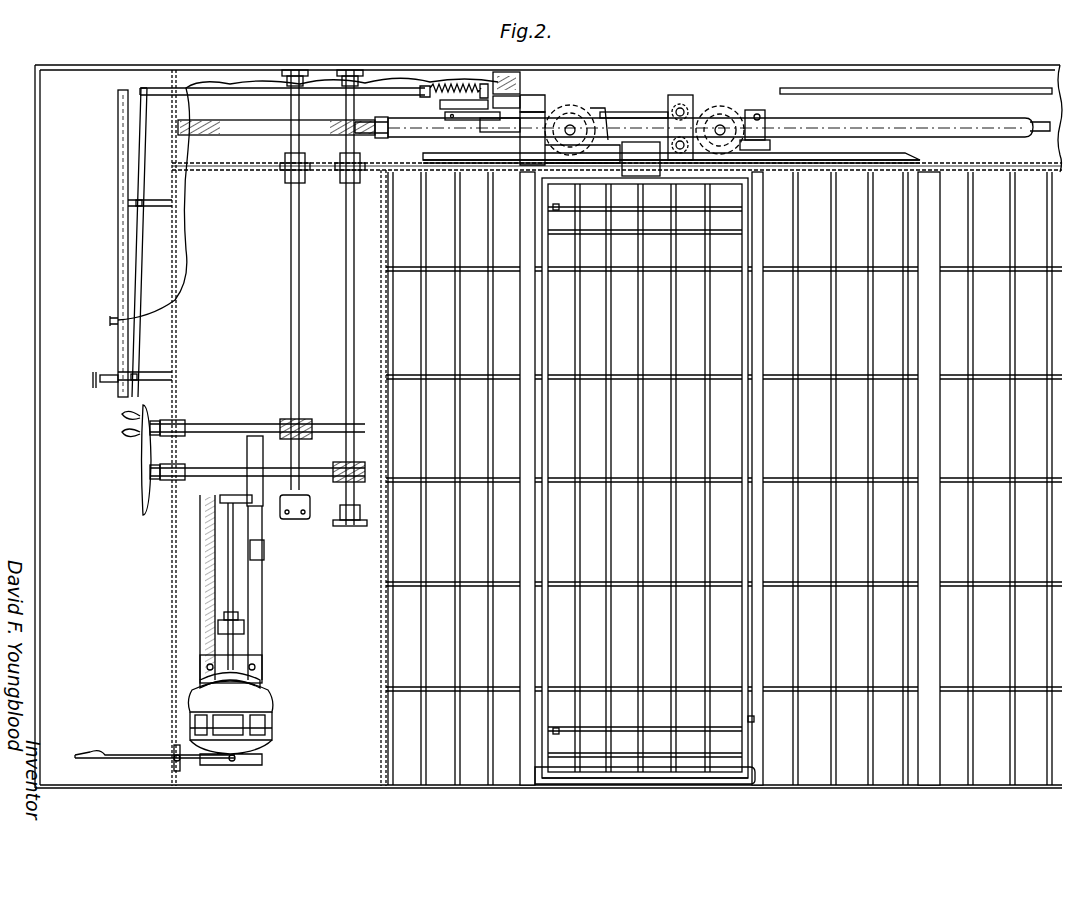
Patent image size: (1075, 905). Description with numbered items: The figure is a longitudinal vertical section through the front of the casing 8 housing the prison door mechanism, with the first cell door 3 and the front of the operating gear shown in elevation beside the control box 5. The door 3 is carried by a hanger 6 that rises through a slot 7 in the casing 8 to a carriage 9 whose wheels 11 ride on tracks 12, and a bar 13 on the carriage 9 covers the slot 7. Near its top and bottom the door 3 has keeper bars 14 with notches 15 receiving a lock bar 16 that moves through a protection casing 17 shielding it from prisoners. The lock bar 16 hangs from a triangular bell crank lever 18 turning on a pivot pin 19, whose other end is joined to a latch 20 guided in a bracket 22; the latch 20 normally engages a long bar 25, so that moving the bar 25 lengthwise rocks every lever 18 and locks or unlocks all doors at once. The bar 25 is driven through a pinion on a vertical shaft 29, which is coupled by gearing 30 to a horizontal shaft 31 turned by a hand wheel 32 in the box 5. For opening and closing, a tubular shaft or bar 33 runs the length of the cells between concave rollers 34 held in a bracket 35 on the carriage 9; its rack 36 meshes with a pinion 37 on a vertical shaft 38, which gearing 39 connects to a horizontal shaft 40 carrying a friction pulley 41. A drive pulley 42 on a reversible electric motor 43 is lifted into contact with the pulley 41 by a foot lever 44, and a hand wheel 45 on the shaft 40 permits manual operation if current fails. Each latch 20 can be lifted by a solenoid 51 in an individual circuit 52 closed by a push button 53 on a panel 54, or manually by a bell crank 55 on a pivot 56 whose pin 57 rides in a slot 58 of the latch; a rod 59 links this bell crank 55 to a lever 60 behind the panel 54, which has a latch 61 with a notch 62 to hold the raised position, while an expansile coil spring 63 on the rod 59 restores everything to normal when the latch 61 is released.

The door 3 is at (662, 778).
The box 5 is at (35, 258).
The hanger 6 is at (641, 158).
The slot 7 is at (830, 166).
The casing 8 is at (918, 88).
The carriage 9 is at (608, 152).
The wheels 11 is at (578, 115).
The tracks 12 is at (905, 168).
The bar 13 is at (790, 156).
The bars 14 is at (625, 222).
The notches 15 is at (558, 207).
The lock bar 16 is at (727, 312).
The protection casing 17 is at (727, 412).
The bell crank lever 18 is at (756, 110).
The pivot pin 19 is at (762, 142).
The latch 20 is at (640, 112).
The bracket 22 is at (538, 100).
The bar 25 is at (1040, 122).
The vertical shaft 29 is at (291, 248).
The gearing 30 is at (285, 419).
The horizontal shaft 31 is at (210, 424).
The hand wheel 32 is at (122, 418).
The tubular shaft or bar 33 is at (905, 130).
The concave rollers 34 is at (718, 104).
The bracket 35 is at (680, 95).
The rack 36 is at (252, 130).
The pinion 37 is at (338, 125).
The vertical shaft 38 is at (346, 308).
The gearing 39 is at (338, 482).
The horizontal shaft 40 is at (192, 472).
The friction pulley 41 is at (254, 436).
The drive pulley 42 is at (264, 548).
The electric motor 43 is at (258, 688).
The foot lever 44 is at (122, 750).
The hand wheel 45 is at (140, 498).
The solenoid 51 is at (505, 72).
The individual circuit 52 is at (395, 82).
The push button 53 is at (108, 322).
The panel 54 is at (118, 262).
The bell crank 55 is at (475, 108).
The pivot 56 is at (450, 118).
The pin 57 is at (540, 120).
The slot 58 is at (500, 120).
The rod 59 is at (183, 90).
The lever 60 is at (140, 164).
The latch 61 is at (93, 382).
The notch 62 is at (108, 375).
The expansile coil spring 63 is at (448, 84).